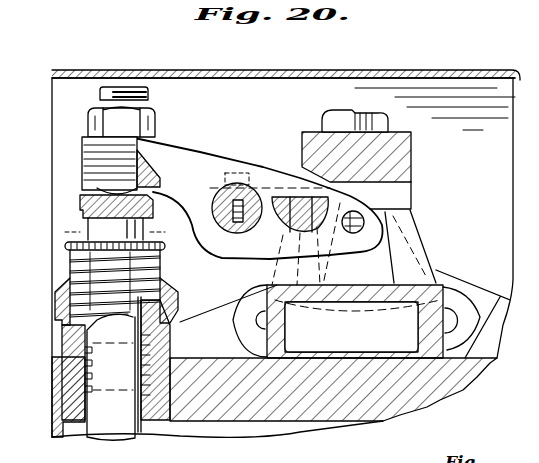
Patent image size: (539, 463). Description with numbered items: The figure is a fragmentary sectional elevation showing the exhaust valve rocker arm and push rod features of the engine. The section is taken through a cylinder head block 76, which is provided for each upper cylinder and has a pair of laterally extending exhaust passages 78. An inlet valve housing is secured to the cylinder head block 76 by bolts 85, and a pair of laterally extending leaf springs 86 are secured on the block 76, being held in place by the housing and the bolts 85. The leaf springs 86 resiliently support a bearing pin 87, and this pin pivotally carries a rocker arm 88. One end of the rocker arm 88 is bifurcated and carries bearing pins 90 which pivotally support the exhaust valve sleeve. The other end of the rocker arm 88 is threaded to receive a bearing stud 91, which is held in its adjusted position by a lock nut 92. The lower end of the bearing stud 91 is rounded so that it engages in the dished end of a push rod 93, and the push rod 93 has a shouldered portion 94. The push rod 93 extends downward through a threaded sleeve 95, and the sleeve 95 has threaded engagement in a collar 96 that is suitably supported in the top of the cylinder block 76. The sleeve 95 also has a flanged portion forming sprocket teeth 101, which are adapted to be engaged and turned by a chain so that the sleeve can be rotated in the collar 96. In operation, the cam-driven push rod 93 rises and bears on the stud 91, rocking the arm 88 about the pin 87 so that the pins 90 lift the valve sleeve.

The cylinder head block 76 is at (500, 296).
The exhaust passages 78 is at (366, 337).
The bolts 85 is at (340, 101).
The leaf springs 86 is at (402, 195).
The bearing pin 87 is at (256, 190).
The rocker arm 88 is at (200, 153).
The bearing pins 90 is at (352, 234).
The bearing stud 91 is at (100, 92).
The lock nut 92 is at (88, 118).
The push rod 93 is at (122, 229).
The shouldered portion 94 is at (80, 210).
The threaded sleeve 95 is at (80, 257).
The collar 96 is at (177, 288).
The sprocket teeth 101 is at (165, 249).